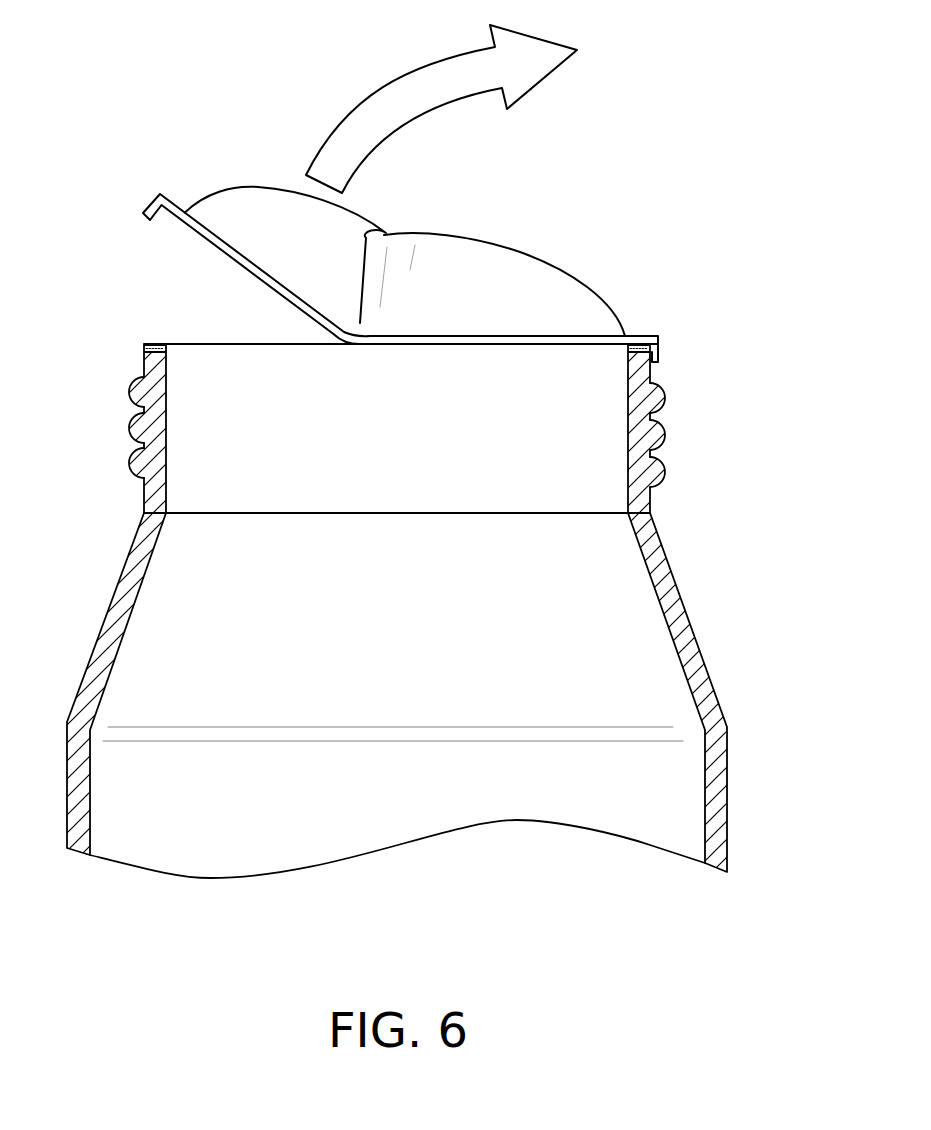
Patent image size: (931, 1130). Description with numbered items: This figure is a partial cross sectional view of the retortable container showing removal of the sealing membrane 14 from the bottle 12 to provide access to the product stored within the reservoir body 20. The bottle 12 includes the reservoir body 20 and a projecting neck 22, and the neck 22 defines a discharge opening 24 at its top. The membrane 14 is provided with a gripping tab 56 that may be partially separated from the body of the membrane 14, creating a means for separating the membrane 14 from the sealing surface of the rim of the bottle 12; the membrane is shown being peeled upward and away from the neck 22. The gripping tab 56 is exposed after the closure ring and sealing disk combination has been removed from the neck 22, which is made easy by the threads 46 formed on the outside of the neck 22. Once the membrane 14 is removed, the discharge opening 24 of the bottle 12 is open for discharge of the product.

The bottle 12 is at (706, 657).
The sealing membrane 14 is at (207, 243).
The reservoir body 20 is at (725, 796).
The neck 22 is at (640, 503).
The discharge opening 24 is at (257, 480).
The threads 46 is at (657, 440).
The gripping tab 56 is at (502, 284).